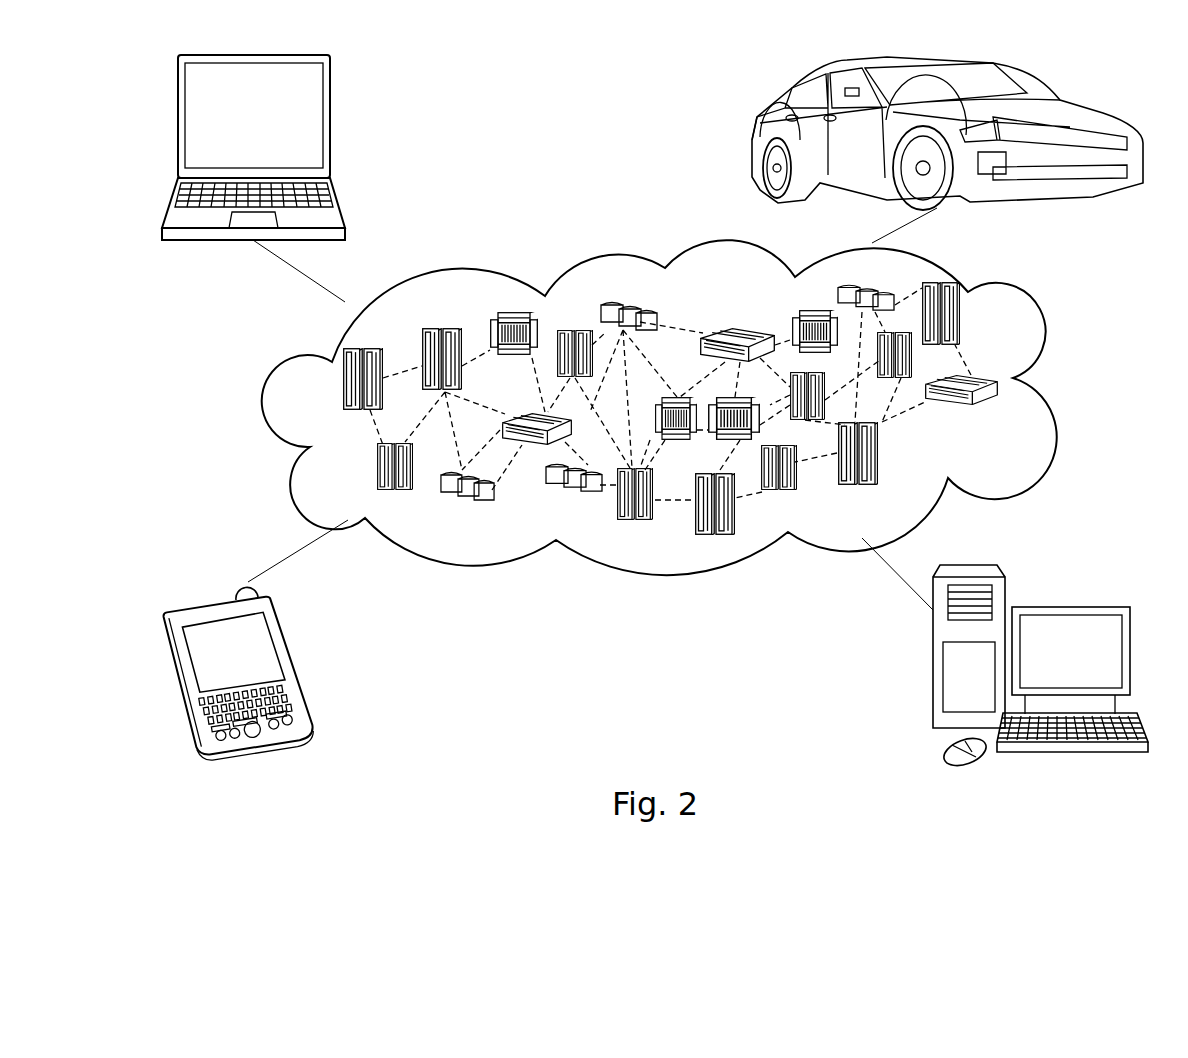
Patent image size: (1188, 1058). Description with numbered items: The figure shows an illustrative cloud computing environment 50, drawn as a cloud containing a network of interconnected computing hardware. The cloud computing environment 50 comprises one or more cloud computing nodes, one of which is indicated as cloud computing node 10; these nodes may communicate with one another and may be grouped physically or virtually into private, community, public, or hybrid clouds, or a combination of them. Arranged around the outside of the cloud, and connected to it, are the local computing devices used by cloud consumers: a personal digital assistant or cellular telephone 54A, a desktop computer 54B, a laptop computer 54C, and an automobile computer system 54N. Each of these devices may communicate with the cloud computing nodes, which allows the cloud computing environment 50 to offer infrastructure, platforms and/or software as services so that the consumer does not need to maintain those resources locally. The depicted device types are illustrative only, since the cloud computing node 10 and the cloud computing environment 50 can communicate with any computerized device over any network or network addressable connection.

The cloud computing environment 50 is at (1060, 400).
The cloud computing node 10 is at (1015, 417).
The personal digital assistant or cellular telephone 54A is at (300, 670).
The desktop computer 54B is at (935, 703).
The laptop computer 54C is at (344, 150).
The automobile computer system 54N is at (757, 130).